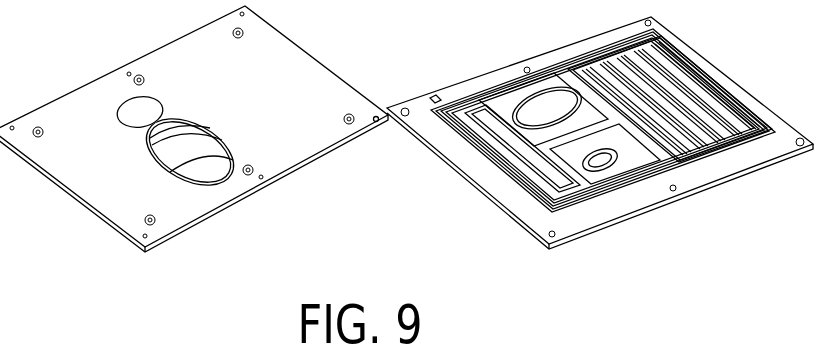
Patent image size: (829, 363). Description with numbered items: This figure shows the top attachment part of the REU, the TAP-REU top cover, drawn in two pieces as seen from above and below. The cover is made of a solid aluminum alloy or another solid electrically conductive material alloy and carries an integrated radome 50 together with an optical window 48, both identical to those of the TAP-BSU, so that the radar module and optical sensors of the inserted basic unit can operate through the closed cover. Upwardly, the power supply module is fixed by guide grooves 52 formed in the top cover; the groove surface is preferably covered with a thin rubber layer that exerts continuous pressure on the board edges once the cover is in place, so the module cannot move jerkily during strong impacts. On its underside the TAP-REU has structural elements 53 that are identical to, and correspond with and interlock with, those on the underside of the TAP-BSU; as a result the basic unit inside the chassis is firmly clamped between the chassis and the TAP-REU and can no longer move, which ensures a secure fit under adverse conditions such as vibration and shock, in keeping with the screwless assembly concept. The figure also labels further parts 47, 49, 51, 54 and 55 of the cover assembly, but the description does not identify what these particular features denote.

The cover plate 47 is at (90, 167).
The optical window 48 is at (130, 108).
The alignment hole 49 is at (375, 122).
The integrated radome 50 is at (200, 158).
The corner post 51 is at (437, 103).
The guide grooves 52 is at (686, 110).
The structural elements 53 is at (509, 114).
The raised rim 54 is at (492, 158).
The divider wall 55 is at (606, 112).